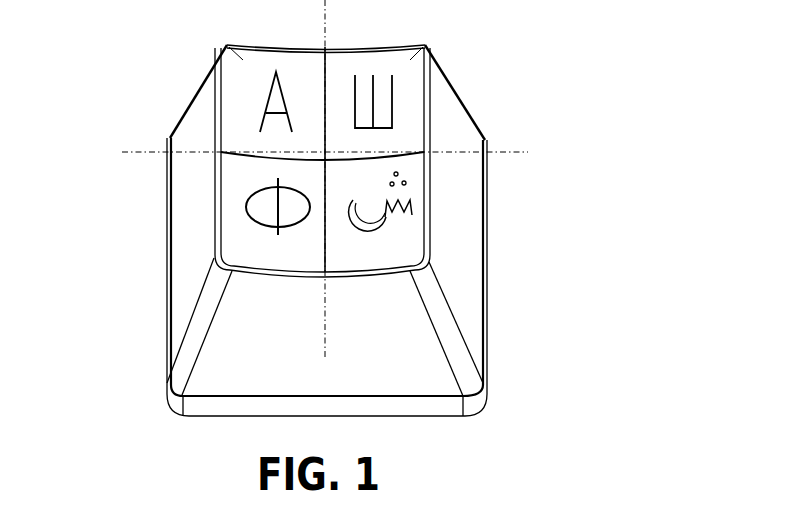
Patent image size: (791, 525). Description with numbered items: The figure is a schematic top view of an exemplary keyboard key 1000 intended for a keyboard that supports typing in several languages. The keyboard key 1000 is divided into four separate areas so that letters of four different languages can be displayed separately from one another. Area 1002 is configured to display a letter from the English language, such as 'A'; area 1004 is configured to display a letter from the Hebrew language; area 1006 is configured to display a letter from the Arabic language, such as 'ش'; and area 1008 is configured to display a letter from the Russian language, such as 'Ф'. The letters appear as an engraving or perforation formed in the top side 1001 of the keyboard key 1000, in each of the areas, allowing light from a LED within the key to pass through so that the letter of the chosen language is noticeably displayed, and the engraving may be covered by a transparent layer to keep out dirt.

The keyboard key 1000 is at (566, 81).
The top side 1001 is at (230, 180).
The area 1002 is at (228, 47).
The area 1004 is at (425, 45).
The area 1006 is at (420, 222).
The area 1008 is at (230, 222).